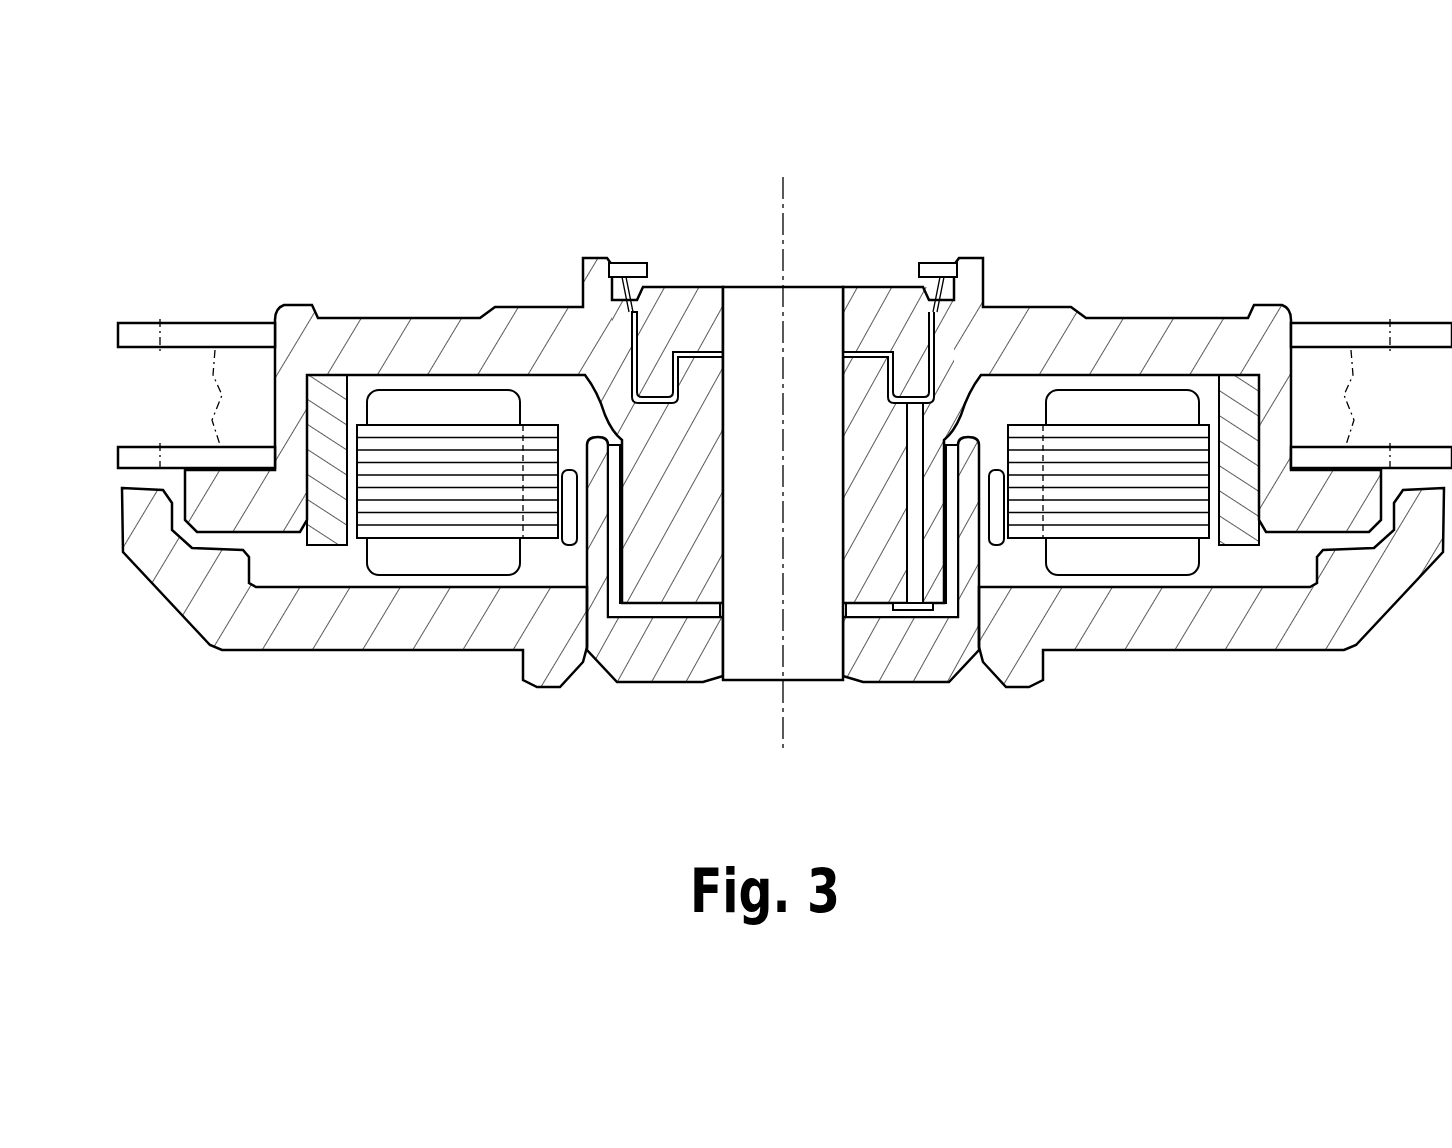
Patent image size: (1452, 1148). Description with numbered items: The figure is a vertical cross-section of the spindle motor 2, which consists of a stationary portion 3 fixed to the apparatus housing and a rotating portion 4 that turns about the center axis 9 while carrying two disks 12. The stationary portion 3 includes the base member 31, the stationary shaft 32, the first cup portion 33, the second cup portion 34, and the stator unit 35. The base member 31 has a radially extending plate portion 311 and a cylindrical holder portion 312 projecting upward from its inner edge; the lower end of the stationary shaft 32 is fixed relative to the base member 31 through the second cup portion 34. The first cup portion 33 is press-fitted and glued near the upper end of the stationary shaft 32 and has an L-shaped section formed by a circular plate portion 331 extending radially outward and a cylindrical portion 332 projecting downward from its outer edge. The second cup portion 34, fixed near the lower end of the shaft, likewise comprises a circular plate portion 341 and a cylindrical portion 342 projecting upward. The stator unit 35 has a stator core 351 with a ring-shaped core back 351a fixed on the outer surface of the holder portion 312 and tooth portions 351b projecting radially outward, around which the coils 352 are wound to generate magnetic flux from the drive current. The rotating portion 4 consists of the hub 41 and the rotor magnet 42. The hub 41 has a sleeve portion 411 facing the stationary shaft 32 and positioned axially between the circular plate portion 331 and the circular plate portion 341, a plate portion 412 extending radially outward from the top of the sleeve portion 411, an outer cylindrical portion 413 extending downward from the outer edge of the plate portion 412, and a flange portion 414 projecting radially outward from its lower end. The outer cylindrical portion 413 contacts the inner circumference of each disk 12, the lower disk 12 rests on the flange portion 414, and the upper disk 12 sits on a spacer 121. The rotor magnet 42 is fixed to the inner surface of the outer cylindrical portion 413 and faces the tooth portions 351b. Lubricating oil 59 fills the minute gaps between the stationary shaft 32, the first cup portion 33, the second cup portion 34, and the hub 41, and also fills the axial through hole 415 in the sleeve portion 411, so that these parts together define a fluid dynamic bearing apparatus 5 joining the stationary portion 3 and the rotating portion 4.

The spindle motor 2 is at (267, 145).
The stationary portion 3 is at (1000, 702).
The base member 31 is at (368, 720).
The plate portion 311 is at (405, 623).
The holder portion 312 is at (558, 550).
The second cup portion 34 is at (580, 746).
The circular plate portion 341 is at (663, 660).
The cylindrical portion 342 is at (597, 570).
The rotating portion 4 is at (1207, 290).
The hub 41 is at (230, 233).
The sleeve portion 411 is at (667, 467).
The plate portion 412 is at (412, 340).
The outer cylindrical portion 413 is at (293, 423).
The flange portion 414 is at (246, 490).
The through hole 415 is at (919, 435).
The rotor magnet 42 is at (1255, 410).
The fluid dynamic bearing apparatus 5 is at (672, 280).
The first cup portion 33 is at (857, 205).
The circular plate portion 331 is at (872, 327).
The cylindrical portion 332 is at (914, 365).
The lubricating oil 59 is at (915, 618).
The stationary shaft 32 is at (815, 300).
The center axis 9 is at (781, 222).
The stator unit 35 is at (1115, 773).
The stator core 351 is at (1073, 726).
The core back 351a is at (1030, 470).
The tooth portions 351b is at (1120, 510).
The coils 352 is at (1170, 560).
The disks 12 is at (137, 463).
The spacer 121 is at (216, 395).